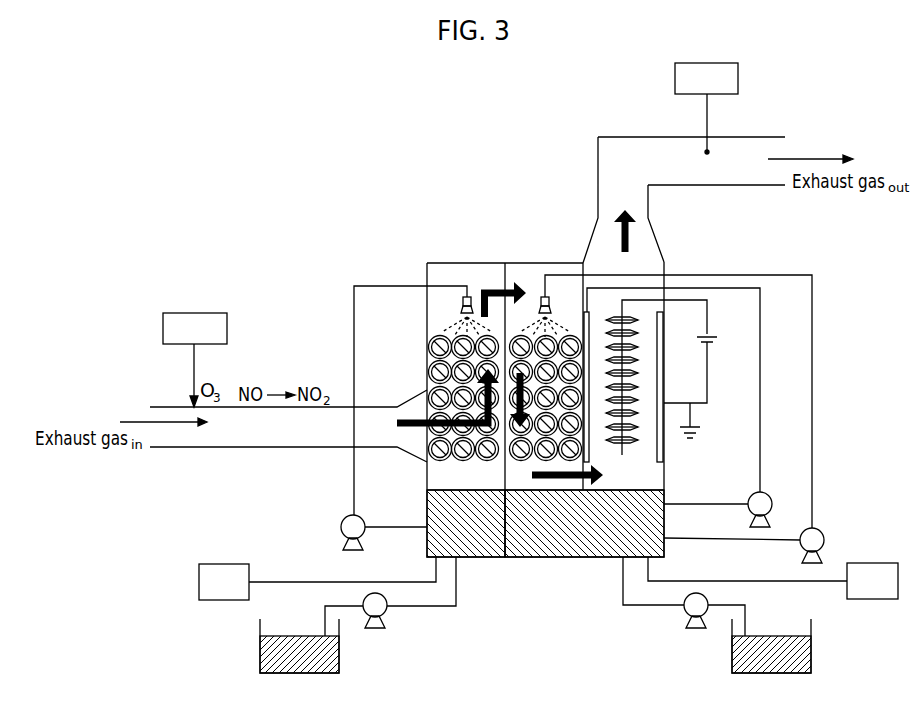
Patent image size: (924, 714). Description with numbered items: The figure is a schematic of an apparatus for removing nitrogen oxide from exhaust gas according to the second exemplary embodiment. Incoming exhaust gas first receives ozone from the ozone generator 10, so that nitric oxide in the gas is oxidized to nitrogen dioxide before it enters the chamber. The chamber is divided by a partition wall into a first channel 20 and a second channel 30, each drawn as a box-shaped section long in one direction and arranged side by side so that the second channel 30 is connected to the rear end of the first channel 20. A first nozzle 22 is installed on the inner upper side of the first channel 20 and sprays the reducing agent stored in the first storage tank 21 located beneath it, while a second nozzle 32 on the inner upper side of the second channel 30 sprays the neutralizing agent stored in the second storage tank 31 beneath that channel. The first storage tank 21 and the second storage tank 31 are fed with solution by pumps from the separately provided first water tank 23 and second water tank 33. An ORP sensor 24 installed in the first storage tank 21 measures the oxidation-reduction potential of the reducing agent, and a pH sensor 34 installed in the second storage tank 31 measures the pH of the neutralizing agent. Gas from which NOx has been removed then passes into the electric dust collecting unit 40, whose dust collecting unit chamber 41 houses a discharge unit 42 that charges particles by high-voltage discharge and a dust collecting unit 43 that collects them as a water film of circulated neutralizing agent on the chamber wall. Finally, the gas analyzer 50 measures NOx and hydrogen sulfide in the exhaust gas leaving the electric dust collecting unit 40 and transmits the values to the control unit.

The ozone generator 10 is at (227, 328).
The first channel 20 is at (427, 357).
The first storage tank 21 is at (481, 558).
The first nozzle 22 is at (462, 302).
The first water tank 23 is at (333, 650).
The ORP sensor 24 is at (236, 563).
The second channel 30 is at (563, 262).
The second storage tank 31 is at (578, 558).
The second nozzle 32 is at (540, 296).
The second water tank 33 is at (808, 650).
The pH sensor 34 is at (870, 562).
The electric dust collecting unit 40 is at (675, 252).
The dust collecting unit chamber 41 is at (664, 283).
The discharge unit 42 is at (623, 408).
The dust collecting unit 43 is at (663, 445).
The gas analyzer 50 is at (738, 80).